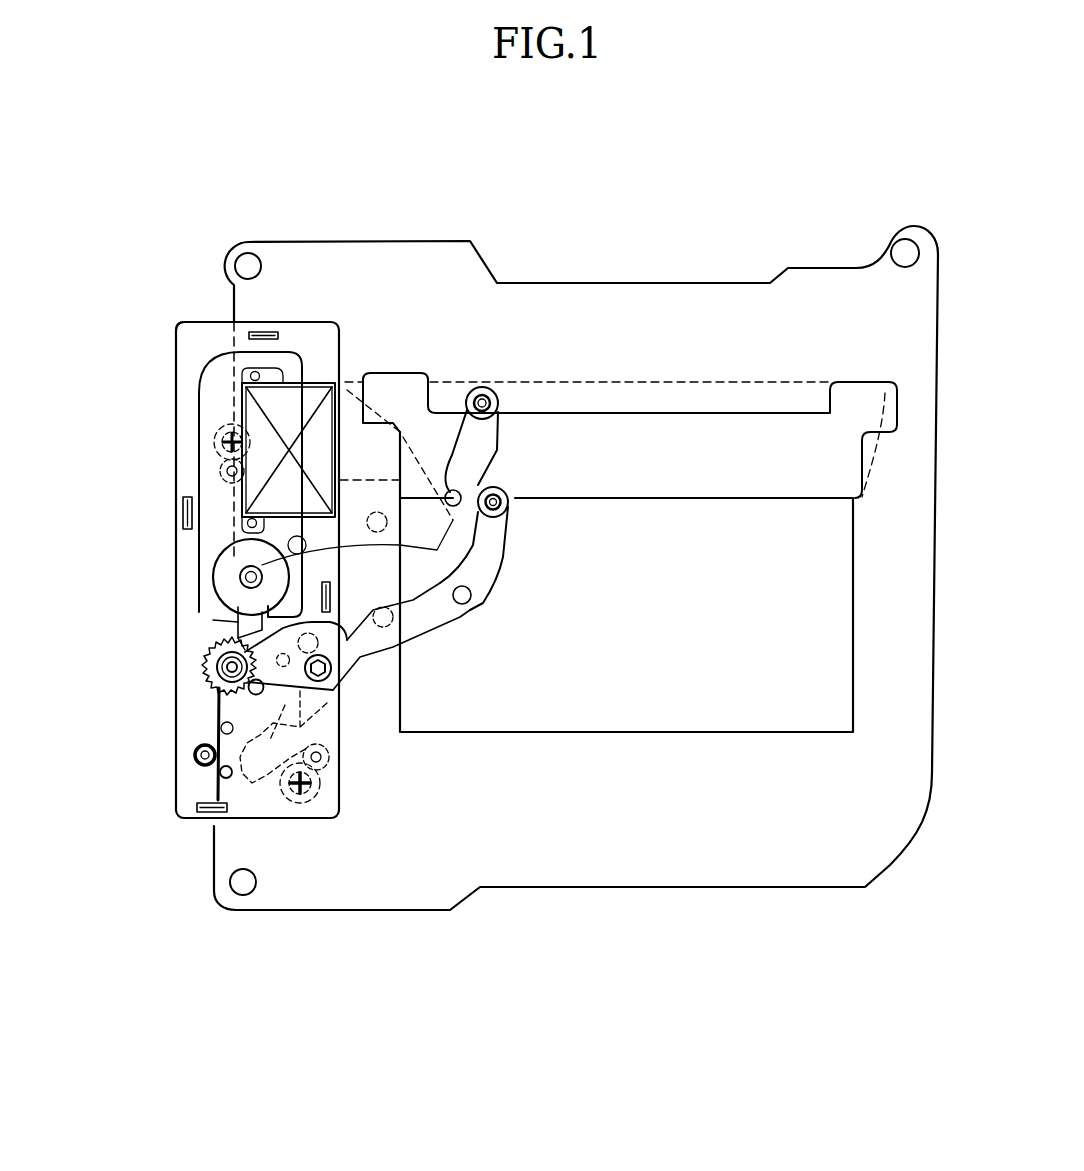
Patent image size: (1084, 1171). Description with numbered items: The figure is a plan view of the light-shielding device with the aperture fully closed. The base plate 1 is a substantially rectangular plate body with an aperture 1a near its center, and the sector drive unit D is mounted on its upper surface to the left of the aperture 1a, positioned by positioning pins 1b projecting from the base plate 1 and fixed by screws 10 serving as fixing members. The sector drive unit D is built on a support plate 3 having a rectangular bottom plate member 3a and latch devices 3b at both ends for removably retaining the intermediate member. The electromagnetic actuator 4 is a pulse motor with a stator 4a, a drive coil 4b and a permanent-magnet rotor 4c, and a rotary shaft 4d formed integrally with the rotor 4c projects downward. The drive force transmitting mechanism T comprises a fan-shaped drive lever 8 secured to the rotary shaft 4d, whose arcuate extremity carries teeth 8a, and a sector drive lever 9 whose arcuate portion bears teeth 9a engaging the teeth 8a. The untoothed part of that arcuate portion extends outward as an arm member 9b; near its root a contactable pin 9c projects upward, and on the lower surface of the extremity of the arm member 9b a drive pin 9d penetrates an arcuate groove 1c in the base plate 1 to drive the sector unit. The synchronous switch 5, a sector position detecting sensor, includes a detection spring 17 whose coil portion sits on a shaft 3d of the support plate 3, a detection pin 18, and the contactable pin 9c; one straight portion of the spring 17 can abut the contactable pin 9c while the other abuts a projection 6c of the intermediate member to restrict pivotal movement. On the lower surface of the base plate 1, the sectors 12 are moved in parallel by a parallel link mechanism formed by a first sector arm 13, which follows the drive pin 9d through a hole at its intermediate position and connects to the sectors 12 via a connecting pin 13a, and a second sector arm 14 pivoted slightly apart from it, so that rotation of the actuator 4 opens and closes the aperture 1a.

The base plate 1 is at (658, 283).
The aperture 1a is at (711, 734).
The positioning pins 1b is at (212, 461).
The arcuate groove 1c is at (250, 790).
The support plate 3 is at (199, 307).
The bottom plate member 3a is at (178, 320).
The latch devices 3b is at (248, 336).
The shaft 3d is at (220, 772).
The electromagnetic actuator 4 is at (322, 367).
The stator 4a is at (200, 393).
The drive coil 4b is at (241, 405).
The rotor 4c is at (240, 612).
The rotary shaft 4d is at (240, 577).
The synchronous switch 5 is at (86, 683).
The projection 6c is at (218, 778).
The drive lever 8 is at (478, 614).
The teeth 8a is at (213, 620).
The sector drive lever 9 is at (458, 643).
The teeth 9a is at (210, 655).
The arm member 9b is at (265, 700).
The contactable pin 9c is at (248, 687).
The drive pin 9d is at (315, 655).
The screws 10 is at (208, 439).
The sectors 12 is at (717, 498).
The first sector arm 13 is at (480, 577).
The connecting pin 13a is at (500, 505).
The second sector arm 14 is at (505, 442).
The detection spring 17 is at (195, 755).
The detection pin 18 is at (222, 718).
The sector drive unit D is at (304, 303).
The drive force transmitting mechanism T is at (522, 600).